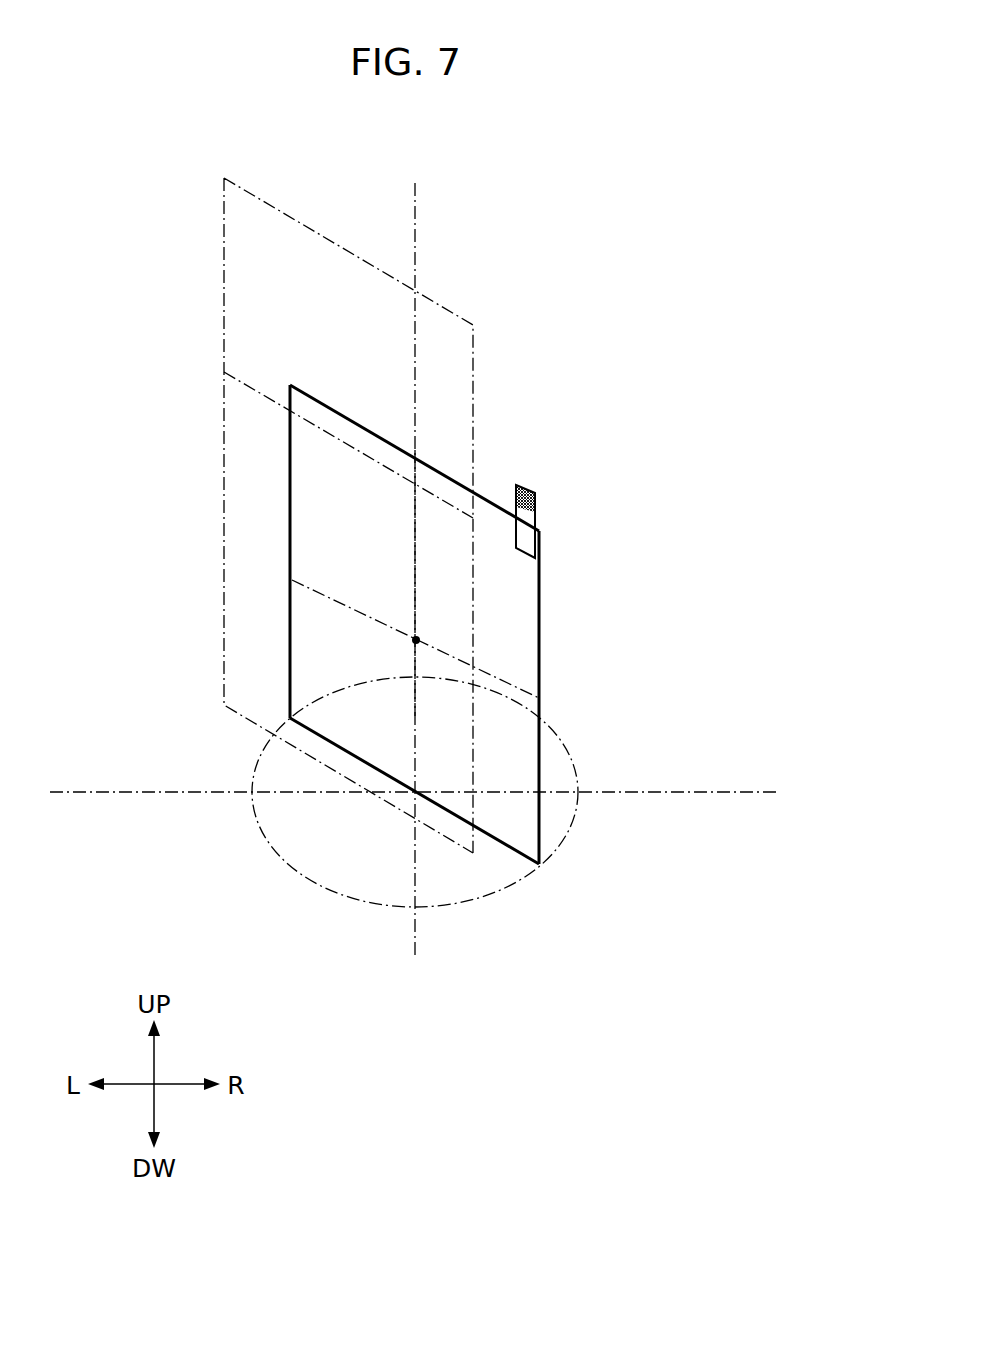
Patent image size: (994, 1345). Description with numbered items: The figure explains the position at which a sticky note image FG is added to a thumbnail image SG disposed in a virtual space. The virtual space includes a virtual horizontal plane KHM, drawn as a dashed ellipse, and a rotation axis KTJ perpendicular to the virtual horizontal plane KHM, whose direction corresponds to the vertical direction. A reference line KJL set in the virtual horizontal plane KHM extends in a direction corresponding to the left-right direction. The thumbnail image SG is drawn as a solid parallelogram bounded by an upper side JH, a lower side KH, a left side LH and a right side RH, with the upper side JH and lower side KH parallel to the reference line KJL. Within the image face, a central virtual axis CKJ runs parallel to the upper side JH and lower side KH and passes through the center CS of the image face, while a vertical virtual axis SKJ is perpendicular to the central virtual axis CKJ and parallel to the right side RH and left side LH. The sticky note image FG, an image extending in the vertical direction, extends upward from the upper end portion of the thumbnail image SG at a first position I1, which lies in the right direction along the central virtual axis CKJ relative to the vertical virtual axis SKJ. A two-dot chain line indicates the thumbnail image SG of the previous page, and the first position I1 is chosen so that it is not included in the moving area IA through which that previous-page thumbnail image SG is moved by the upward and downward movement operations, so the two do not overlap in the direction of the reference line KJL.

The moving area IA is at (303, 233).
The rotation axis KTJ is at (418, 203).
The thumbnail image SG is at (243, 380).
The upper side JH is at (325, 412).
The left side LH is at (296, 486).
The right side RH is at (530, 740).
The lower side KH is at (520, 850).
The central virtual axis CKJ is at (313, 588).
The vertical virtual axis SKJ is at (417, 528).
The center CS is at (414, 641).
The sticky note image FG is at (525, 512).
The first position I1 is at (526, 572).
The virtual horizontal plane KHM is at (572, 828).
The reference line KJL is at (720, 790).